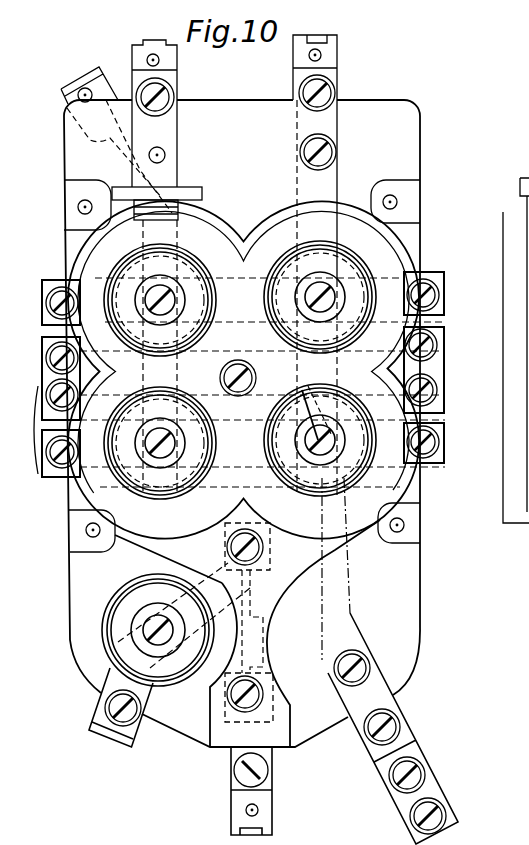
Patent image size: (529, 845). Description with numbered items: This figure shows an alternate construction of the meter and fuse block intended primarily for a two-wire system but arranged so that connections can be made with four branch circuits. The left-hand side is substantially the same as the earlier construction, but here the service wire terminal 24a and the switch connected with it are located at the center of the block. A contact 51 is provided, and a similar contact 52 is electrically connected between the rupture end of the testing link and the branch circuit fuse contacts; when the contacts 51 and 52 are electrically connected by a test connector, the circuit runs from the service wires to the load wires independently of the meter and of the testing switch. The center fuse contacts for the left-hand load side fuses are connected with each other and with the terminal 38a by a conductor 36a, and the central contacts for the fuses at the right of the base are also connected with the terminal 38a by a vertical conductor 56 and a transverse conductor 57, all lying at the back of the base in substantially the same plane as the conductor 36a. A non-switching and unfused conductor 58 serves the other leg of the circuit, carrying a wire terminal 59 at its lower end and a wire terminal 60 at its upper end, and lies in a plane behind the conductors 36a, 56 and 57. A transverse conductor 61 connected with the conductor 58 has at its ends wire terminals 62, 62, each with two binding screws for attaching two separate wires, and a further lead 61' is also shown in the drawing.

The contact 52 is at (78, 74).
The terminal 38a is at (174, 93).
The wire terminal 60 is at (338, 73).
The transverse conductor 57 is at (255, 314).
The conductor 36a is at (173, 383).
The lever 61' is at (262, 406).
The vertical conductor 56 is at (302, 390).
The transverse conductor 61 is at (442, 352).
The wire terminal 62 is at (445, 398).
The non-switching and unfused conductor 58 is at (345, 580).
The wire terminal 59 is at (405, 733).
The contact 51 is at (97, 737).
The service wire terminal 24a is at (231, 752).